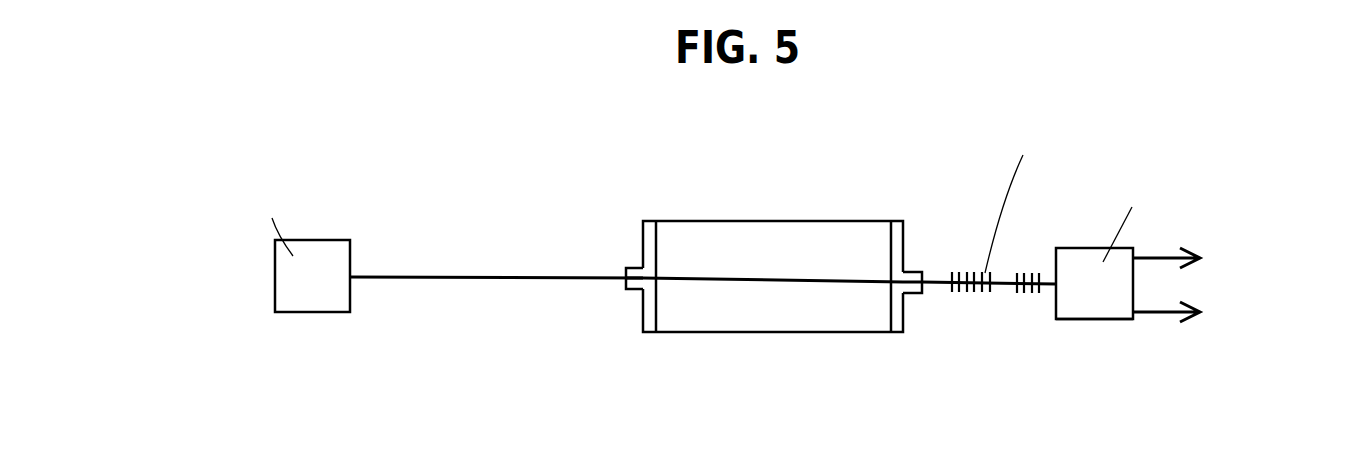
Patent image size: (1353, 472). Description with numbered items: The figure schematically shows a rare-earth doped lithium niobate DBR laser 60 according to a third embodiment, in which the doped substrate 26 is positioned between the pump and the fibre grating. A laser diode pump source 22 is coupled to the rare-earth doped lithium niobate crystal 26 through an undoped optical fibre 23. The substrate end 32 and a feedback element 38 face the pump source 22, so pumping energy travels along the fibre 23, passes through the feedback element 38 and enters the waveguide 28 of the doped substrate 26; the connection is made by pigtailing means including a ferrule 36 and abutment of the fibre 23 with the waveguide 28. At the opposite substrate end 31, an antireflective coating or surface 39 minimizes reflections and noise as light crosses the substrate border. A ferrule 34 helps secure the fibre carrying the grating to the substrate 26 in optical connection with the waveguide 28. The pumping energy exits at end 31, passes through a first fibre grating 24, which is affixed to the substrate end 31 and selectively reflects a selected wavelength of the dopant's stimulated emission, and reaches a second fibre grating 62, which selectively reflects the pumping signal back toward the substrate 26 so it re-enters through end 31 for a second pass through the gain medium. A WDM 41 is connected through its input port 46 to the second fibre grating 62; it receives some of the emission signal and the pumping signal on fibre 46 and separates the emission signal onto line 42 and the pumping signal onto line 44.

The laser 60 is at (403, 134).
The laser diode pump source 22 is at (295, 310).
The undoped optical fibre 23 is at (390, 277).
The doped substrate 26 is at (720, 324).
The waveguide 28 is at (713, 278).
The feedback element 38 is at (652, 225).
The antireflective coating 39 is at (898, 221).
The ferrule 36 is at (628, 268).
The substrate end 32 is at (642, 299).
The ferrule 34 is at (912, 272).
The substrate end 31 is at (903, 322).
The first fibre grating 24 is at (977, 293).
The input port 46 is at (1052, 295).
The second fibre grating 62 is at (1124, 249).
The WDM 41 is at (1097, 321).
The line 42 is at (1159, 258).
The line 44 is at (1162, 312).